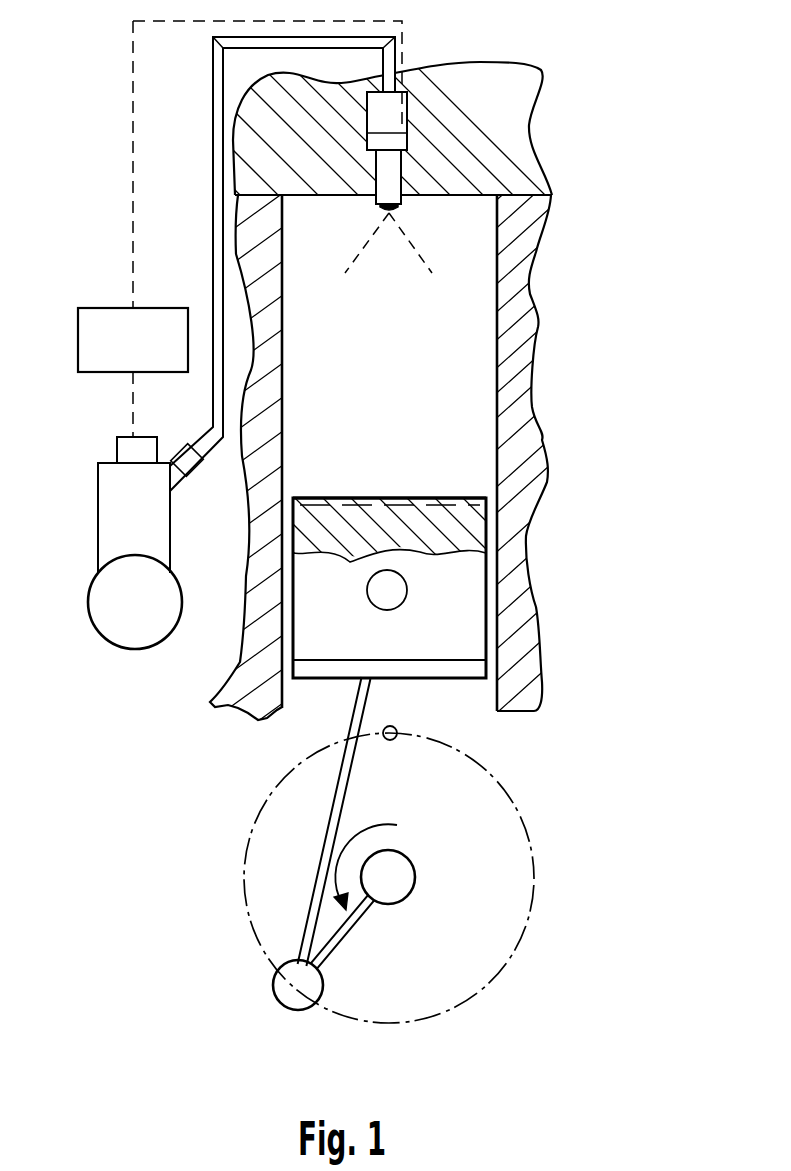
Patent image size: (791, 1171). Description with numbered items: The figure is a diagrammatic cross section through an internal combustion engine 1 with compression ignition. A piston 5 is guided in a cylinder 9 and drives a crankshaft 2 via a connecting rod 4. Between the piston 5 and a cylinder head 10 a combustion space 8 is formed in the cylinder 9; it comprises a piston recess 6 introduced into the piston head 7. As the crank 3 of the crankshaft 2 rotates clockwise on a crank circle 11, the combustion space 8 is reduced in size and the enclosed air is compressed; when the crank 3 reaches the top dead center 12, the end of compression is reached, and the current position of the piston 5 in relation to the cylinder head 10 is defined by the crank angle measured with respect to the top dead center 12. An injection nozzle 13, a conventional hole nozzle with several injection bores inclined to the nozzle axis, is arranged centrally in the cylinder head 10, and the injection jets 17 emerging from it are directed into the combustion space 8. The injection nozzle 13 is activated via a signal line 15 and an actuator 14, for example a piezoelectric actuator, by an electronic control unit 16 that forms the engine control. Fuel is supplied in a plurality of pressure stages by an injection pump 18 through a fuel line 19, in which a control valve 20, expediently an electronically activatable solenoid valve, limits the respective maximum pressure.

The internal combustion engine 1 is at (608, 214).
The crankshaft 2 is at (410, 873).
The crank 3 is at (345, 930).
The connecting rod 4 is at (313, 900).
The piston 5 is at (465, 625).
The piston recess 6 is at (425, 514).
The piston head 7 is at (463, 500).
The combustion space 8 is at (470, 361).
The cylinder 9 is at (517, 283).
The cylinder head 10 is at (252, 147).
The crank circle 11 is at (528, 837).
The top dead center 12 is at (398, 733).
The injection nozzle 13 is at (390, 177).
The actuator 14 is at (407, 128).
The signal line 15 is at (133, 48).
The electronic control unit 16 is at (162, 320).
The injection jets 17 is at (355, 257).
The injection pump 18 is at (108, 535).
The fuel line 19 is at (215, 397).
The control valve 20 is at (125, 448).